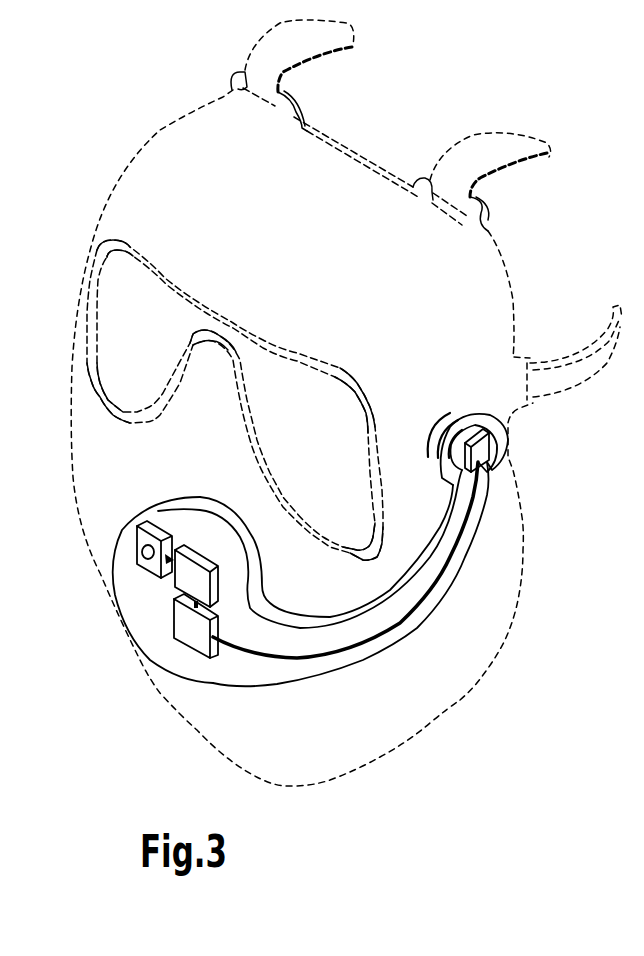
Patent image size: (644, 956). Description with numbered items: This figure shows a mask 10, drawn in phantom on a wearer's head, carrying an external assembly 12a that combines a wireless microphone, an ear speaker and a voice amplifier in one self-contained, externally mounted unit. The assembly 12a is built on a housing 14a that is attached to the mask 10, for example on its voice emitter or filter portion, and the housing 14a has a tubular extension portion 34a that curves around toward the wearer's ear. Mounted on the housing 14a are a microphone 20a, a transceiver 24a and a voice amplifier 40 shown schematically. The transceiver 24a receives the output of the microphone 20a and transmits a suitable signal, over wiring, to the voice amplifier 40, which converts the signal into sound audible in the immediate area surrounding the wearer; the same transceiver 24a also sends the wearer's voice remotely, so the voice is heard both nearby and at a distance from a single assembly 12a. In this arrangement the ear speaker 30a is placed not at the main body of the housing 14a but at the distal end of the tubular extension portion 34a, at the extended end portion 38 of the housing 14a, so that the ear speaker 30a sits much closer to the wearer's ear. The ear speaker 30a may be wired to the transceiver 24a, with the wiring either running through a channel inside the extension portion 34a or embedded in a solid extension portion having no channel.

The mask 10 is at (66, 508).
The external assembly 12a is at (205, 700).
The housing 14a is at (326, 690).
The microphone 20a is at (192, 568).
The transceiver 24a is at (193, 630).
The ear speaker 30a is at (482, 448).
The tubular extension portion 34a is at (395, 640).
The extended end portion 38 is at (140, 563).
The voice amplifier 40 is at (160, 573).